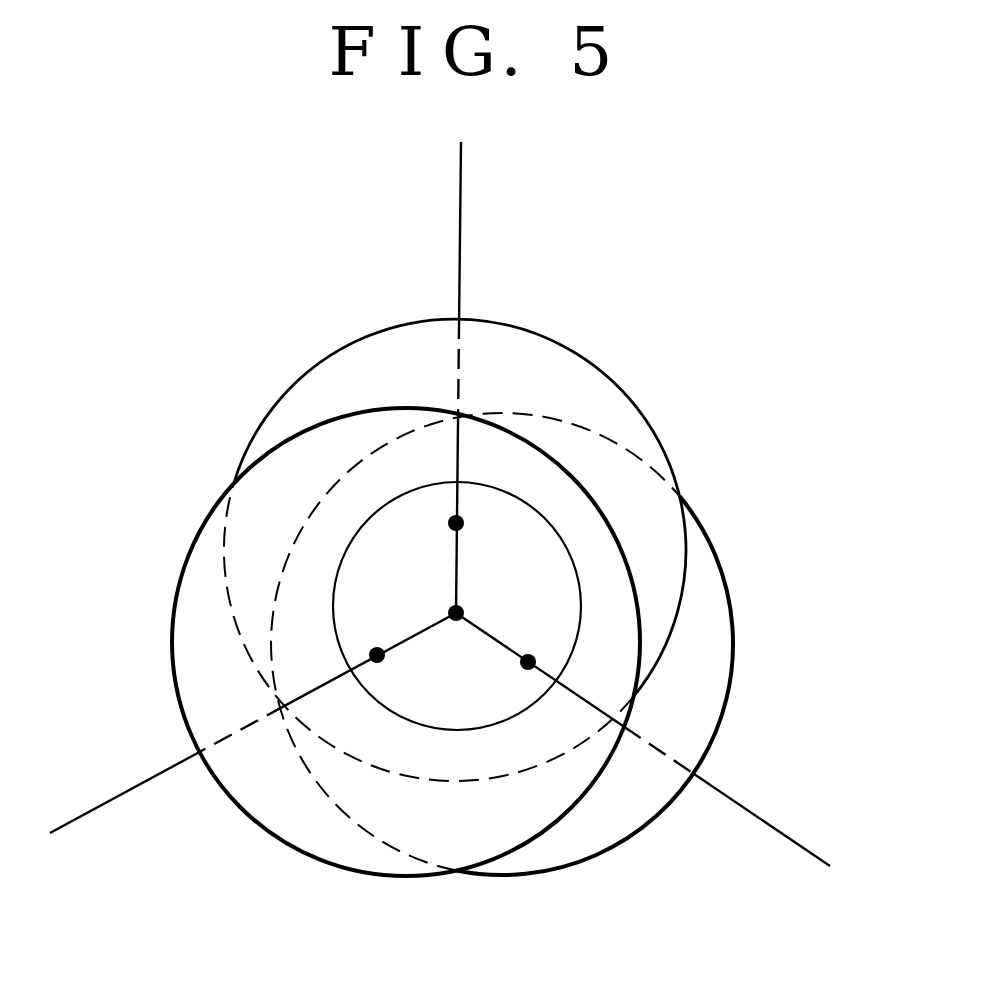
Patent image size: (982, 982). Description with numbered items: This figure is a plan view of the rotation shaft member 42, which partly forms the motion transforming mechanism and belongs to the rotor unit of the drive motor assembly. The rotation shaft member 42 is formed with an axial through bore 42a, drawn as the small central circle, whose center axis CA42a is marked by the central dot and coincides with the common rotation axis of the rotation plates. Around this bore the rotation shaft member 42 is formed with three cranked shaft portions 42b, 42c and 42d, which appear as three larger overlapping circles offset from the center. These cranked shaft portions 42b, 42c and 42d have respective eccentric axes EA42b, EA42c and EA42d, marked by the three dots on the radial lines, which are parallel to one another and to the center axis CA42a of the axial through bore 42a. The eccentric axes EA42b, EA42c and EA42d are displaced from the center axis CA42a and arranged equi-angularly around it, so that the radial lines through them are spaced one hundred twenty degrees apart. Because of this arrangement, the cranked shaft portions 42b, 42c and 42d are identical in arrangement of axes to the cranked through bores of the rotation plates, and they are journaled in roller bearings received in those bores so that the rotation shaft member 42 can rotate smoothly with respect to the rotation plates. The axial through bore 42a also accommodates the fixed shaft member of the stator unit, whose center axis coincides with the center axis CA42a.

The rotation shaft member 42 is at (300, 367).
The axial through bore 42a is at (548, 522).
The cranked shaft portion 42b is at (174, 694).
The cranked shaft portion 42c is at (588, 355).
The cranked shaft portion 42d is at (730, 703).
The center axis of the axial through bore CA42a is at (449, 613).
The eccentric axis of cranked shaft portion 42b EA42b is at (380, 662).
The eccentric axis of cranked shaft portion 42c EA42c is at (455, 530).
The eccentric axis of cranked shaft portion 42d EA42d is at (530, 655).